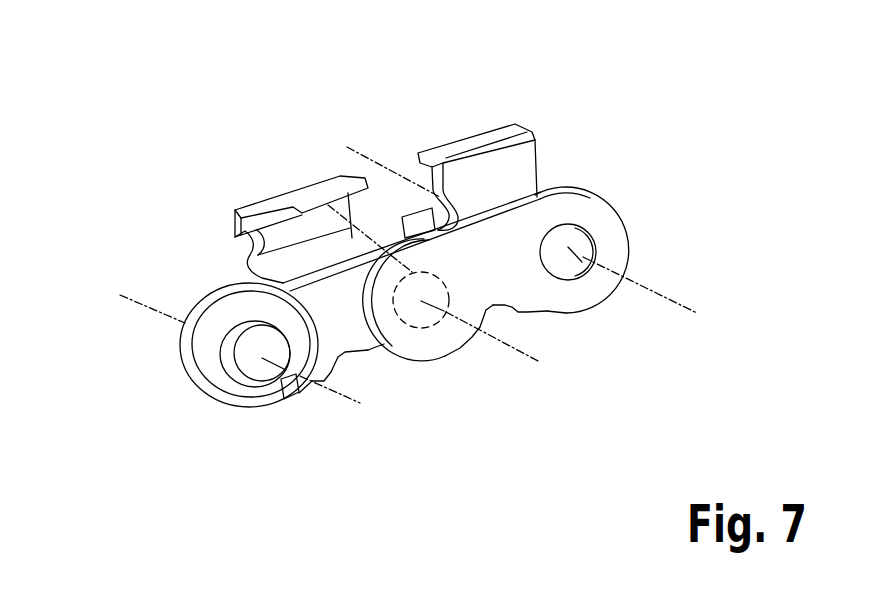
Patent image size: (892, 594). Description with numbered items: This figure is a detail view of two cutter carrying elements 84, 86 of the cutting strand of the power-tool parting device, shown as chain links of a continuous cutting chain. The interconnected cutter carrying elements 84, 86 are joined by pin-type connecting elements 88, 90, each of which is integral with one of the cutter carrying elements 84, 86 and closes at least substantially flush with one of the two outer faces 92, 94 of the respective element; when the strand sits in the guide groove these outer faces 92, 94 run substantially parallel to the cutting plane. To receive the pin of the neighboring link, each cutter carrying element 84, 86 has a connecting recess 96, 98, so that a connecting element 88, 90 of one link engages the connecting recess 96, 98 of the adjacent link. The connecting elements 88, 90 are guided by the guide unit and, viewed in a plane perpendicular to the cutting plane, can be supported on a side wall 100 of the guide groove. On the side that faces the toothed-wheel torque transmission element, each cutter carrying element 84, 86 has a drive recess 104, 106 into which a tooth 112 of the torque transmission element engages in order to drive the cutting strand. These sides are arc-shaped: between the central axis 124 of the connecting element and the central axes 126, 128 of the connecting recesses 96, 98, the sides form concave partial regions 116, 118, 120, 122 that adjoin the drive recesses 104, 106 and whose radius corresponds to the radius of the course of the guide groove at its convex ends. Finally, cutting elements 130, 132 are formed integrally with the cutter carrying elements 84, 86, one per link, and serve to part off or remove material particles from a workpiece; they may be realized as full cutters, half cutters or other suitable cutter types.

The cutter carrying element 84 is at (217, 323).
The cutter carrying element 86 is at (571, 207).
The connecting element 88 is at (254, 370).
The connecting element 90 is at (358, 232).
The outer face 92 is at (483, 260).
The outer face 94 is at (181, 352).
The connecting recess 96 is at (445, 350).
The connecting recess 98 is at (570, 253).
The side wall 100 is at (295, 408).
The drive recess 104 is at (362, 355).
The drive recess 106 is at (573, 338).
The tooth 112 is at (584, 343).
The partial region 116 is at (312, 407).
The partial region 118 is at (404, 396).
The partial region 120 is at (487, 350).
The partial region 122 is at (584, 324).
The central axis 124 is at (124, 298).
The central axis 126 is at (236, 213).
The central axis 128 is at (365, 140).
The cutting element 130 is at (267, 199).
The cutting element 132 is at (443, 146).